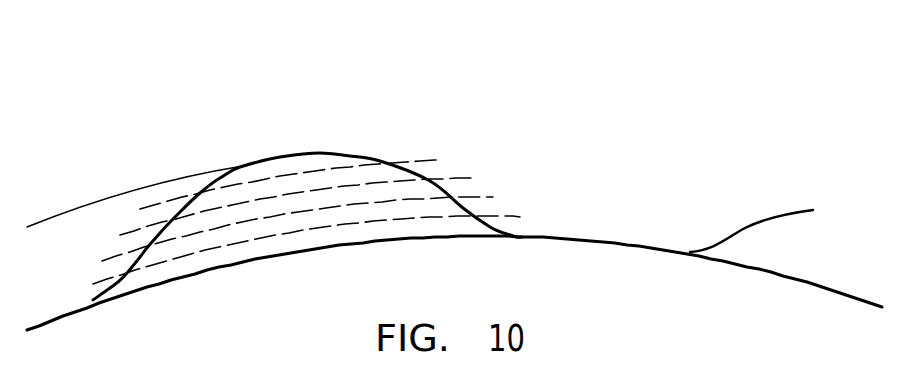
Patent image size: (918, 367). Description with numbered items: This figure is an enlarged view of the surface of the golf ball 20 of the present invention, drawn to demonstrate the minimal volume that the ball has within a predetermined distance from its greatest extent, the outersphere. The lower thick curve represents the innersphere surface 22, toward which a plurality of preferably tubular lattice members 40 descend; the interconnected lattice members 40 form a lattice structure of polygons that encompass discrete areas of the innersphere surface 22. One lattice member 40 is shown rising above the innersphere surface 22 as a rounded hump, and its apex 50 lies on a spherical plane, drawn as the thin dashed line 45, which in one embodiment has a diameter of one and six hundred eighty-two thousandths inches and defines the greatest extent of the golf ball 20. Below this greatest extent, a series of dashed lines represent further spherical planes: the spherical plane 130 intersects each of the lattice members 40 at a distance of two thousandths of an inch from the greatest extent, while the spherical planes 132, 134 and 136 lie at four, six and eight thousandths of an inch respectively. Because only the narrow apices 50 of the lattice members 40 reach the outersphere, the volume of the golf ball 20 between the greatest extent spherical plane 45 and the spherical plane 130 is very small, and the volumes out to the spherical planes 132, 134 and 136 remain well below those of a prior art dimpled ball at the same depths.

The golf ball 20 is at (580, 54).
The innersphere surface 22 is at (641, 246).
The lattice member 40 is at (260, 250).
The greatest extent spherical plane 45 is at (110, 198).
The apex of lattice member 50 is at (293, 155).
The spherical plane 130 is at (423, 161).
The spherical plane 132 is at (453, 178).
The spherical plane 134 is at (478, 197).
The spherical plane 136 is at (498, 217).